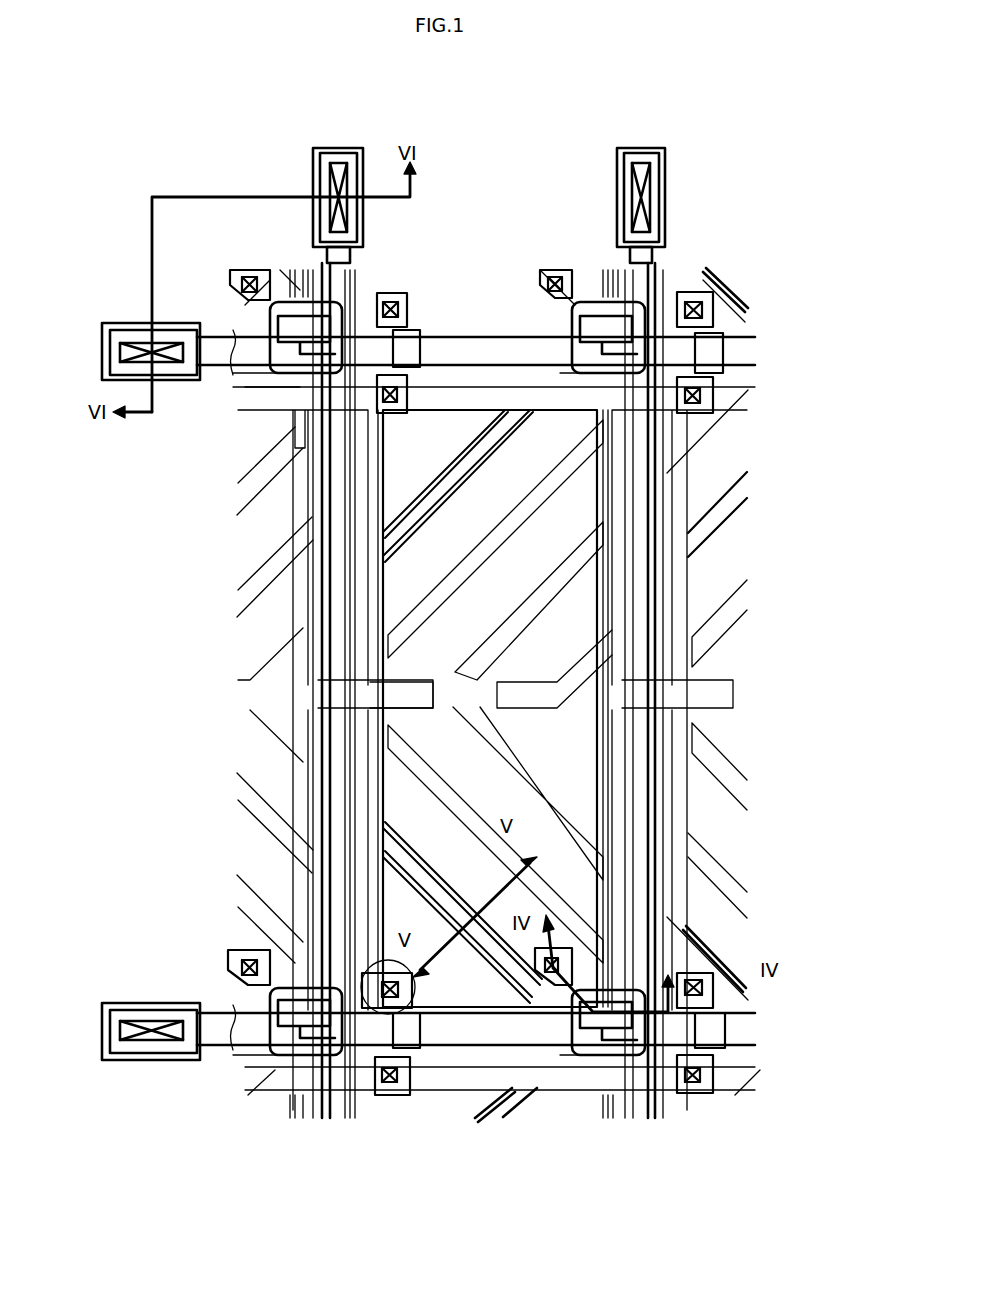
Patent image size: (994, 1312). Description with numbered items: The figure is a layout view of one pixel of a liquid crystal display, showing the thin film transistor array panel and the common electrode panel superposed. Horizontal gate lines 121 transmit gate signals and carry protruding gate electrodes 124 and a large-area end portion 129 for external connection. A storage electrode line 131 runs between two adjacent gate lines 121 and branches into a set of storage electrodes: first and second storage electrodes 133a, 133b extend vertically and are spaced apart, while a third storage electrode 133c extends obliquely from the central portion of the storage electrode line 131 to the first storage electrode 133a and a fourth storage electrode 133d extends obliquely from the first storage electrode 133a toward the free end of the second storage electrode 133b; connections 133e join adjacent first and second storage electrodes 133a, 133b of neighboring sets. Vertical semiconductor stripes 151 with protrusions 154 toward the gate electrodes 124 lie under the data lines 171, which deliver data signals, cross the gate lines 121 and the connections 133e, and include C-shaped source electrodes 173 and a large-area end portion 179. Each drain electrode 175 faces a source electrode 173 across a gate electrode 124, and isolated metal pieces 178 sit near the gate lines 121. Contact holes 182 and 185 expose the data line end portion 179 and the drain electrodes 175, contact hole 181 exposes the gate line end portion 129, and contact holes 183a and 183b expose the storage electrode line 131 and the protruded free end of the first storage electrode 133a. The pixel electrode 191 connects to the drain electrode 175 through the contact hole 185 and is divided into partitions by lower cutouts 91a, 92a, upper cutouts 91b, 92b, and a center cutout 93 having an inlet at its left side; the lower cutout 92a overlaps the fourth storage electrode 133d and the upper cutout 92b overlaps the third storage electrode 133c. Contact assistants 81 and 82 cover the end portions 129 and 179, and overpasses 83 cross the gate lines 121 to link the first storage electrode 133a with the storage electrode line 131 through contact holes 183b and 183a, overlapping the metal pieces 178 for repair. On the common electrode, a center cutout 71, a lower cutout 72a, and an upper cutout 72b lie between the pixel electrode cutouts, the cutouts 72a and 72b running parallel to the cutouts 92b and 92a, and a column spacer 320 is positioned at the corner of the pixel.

The center cutout 71 is at (538, 682).
The lower cutout 72a is at (455, 795).
The upper cutout 72b is at (530, 492).
The contact assistant 81 is at (102, 352).
The contact assistant 82 is at (313, 170).
The overpass 83 is at (398, 293).
The lower cutout 91a is at (535, 768).
The upper cutout 91b is at (530, 605).
The lower cutout 92a is at (405, 852).
The upper cutout 92b is at (432, 512).
The center cutout 93 is at (428, 682).
The gate line 121 is at (470, 1095).
The gate electrode 124 is at (580, 1060).
The end portion of gate line 129 is at (176, 375).
The storage electrode line 131 is at (433, 370).
The first storage electrode 133a is at (308, 535).
The second storage electrode 133b is at (672, 590).
The third storage electrode 133c is at (460, 462).
The fourth storage electrode 133d is at (468, 880).
The connection 133e is at (733, 695).
The semiconductor stripe 151 is at (313, 635).
The protrusion of semiconductor stripe 154 is at (552, 1060).
The data line 171 is at (322, 760).
The source electrode 173 is at (620, 1058).
The drain electrode 175 is at (535, 985).
The isolated metal piece 178 is at (375, 1060).
The end portion of data line 179 is at (338, 153).
The contact hole 181 is at (170, 343).
The contact hole 182 is at (350, 218).
The contact hole 183a is at (392, 1095).
The contact hole 183b is at (248, 950).
The contact hole 185 is at (720, 965).
The pixel electrode 191 is at (490, 1010).
The column spacer 320 is at (362, 975).